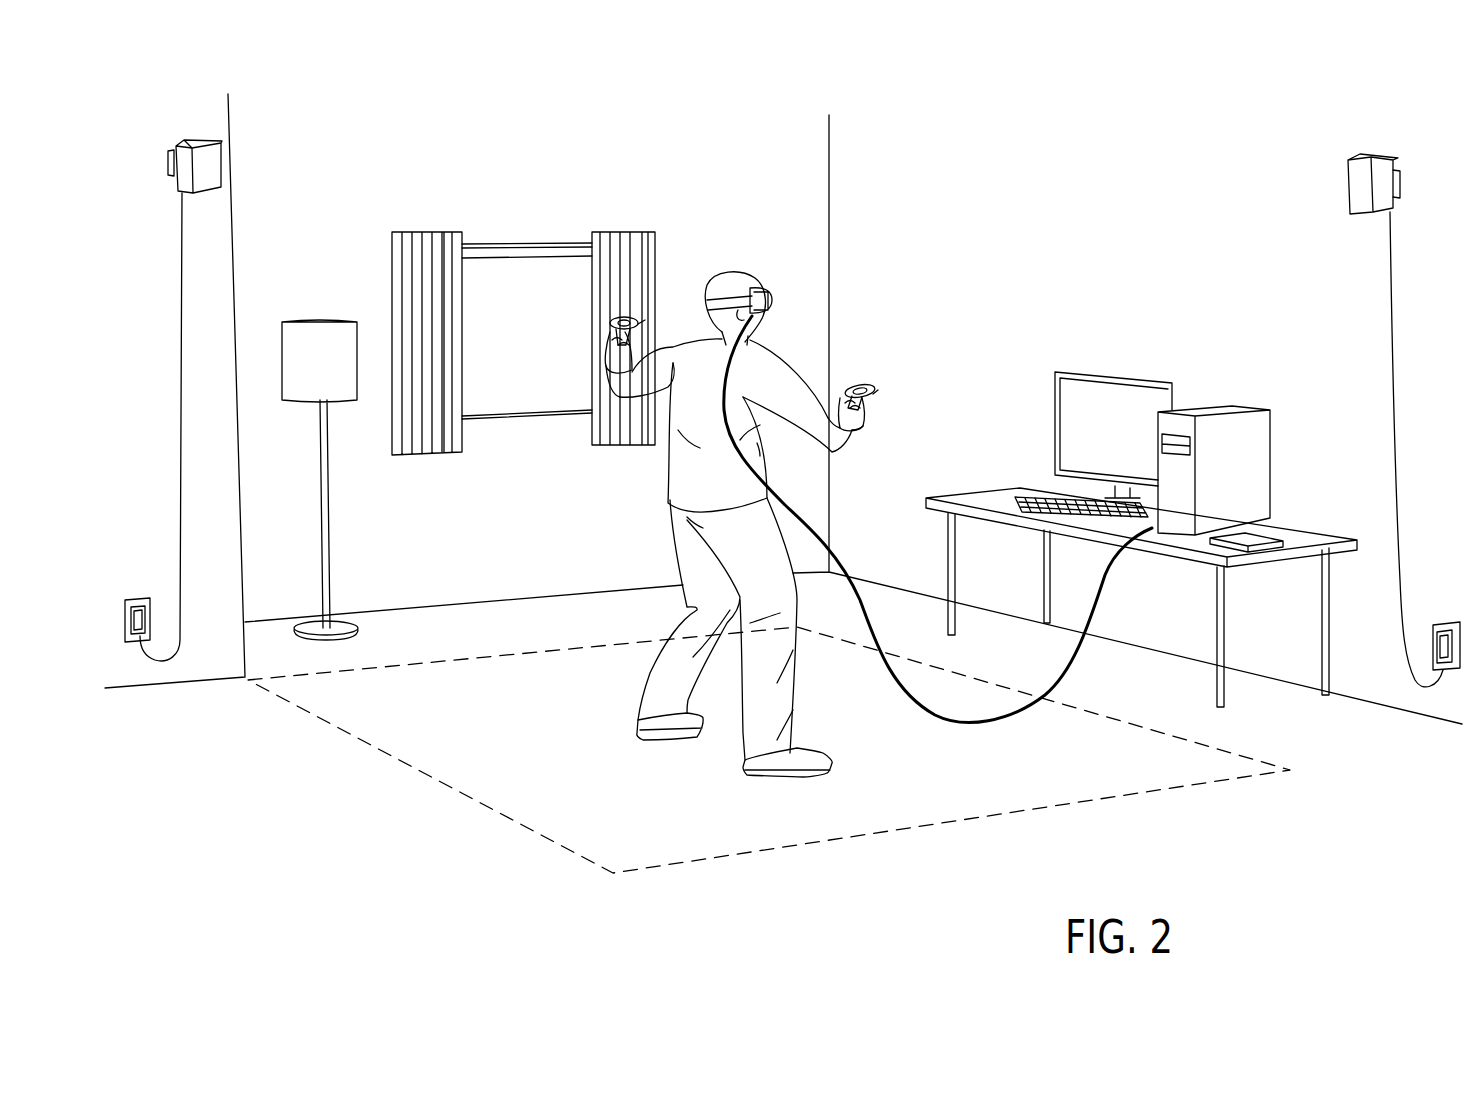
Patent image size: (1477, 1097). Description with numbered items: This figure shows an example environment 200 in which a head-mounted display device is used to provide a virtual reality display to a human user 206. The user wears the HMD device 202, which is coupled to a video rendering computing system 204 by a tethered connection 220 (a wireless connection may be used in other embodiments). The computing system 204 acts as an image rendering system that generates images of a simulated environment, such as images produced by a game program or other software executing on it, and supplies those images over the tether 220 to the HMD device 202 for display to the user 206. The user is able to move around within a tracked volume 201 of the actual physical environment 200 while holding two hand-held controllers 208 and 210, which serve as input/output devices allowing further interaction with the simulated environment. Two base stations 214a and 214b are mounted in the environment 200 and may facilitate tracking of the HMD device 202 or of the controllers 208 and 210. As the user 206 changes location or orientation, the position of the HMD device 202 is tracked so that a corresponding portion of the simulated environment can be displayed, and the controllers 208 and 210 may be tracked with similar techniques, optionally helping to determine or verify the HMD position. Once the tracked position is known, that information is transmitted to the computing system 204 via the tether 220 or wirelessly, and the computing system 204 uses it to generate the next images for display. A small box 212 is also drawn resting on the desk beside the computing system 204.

The environment 200 is at (1198, 98).
The tracked volume 201 is at (357, 711).
The HMD device 202 is at (764, 294).
The video rendering computing system 204 is at (1208, 408).
The human user 206 is at (752, 507).
The hand-held controller 208 is at (632, 318).
The hand-held controller 210 is at (862, 388).
The wireless transceiver box 212 is at (1250, 536).
The base station 214a is at (212, 154).
The base station 214b is at (1357, 186).
The tethered connection 220 is at (960, 722).